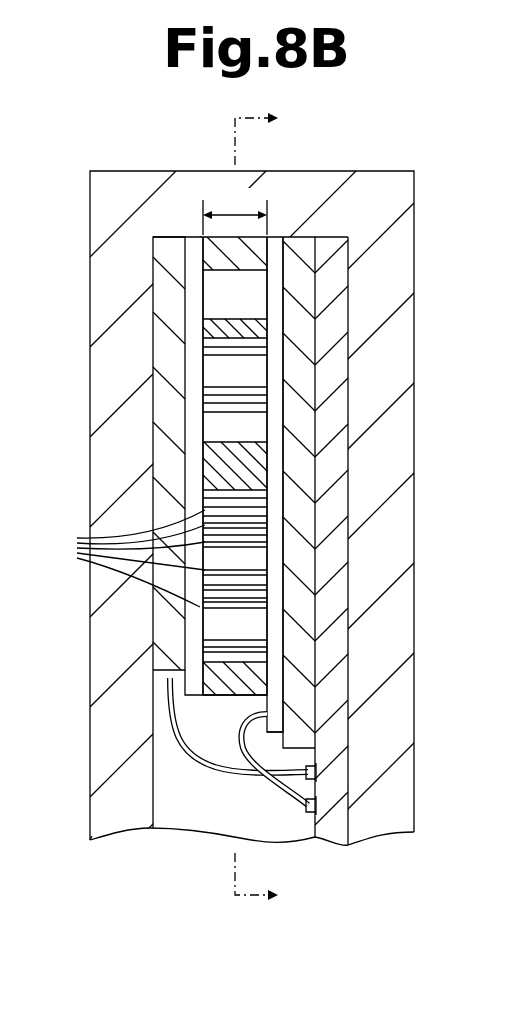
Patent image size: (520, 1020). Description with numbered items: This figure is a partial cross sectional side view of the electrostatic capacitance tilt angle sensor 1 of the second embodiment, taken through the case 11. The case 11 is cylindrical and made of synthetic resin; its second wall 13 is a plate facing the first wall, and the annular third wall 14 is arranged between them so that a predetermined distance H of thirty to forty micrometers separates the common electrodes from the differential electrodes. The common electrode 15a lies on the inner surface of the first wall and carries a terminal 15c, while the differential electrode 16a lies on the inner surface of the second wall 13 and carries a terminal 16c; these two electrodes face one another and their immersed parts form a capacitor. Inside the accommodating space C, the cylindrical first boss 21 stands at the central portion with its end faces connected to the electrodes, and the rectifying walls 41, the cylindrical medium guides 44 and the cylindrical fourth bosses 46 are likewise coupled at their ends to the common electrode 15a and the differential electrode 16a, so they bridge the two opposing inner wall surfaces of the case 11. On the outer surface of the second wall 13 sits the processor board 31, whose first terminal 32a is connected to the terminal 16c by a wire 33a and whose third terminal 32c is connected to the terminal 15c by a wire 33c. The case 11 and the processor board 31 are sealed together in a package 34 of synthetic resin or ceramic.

The tilt angle sensor 1 is at (414, 143).
The case 11 is at (167, 225).
The second wall 13 is at (336, 578).
The third wall 14 is at (272, 258).
The common electrode 15a is at (195, 432).
The terminal 15c is at (193, 673).
The differential electrode 16a is at (276, 498).
The terminal 16c is at (272, 717).
The first boss 21 is at (258, 423).
The processor board 31 is at (341, 838).
The first terminal 32a is at (318, 772).
The third terminal 32c is at (318, 808).
The wire 33a is at (246, 752).
The wire 33c is at (190, 762).
The package 34 is at (124, 822).
The rectifying wall 41 is at (254, 374).
The medium guide 44 is at (117, 558).
The fourth boss 46 is at (266, 325).
The predetermined distance H is at (233, 209).
The accommodating space C is at (228, 658).